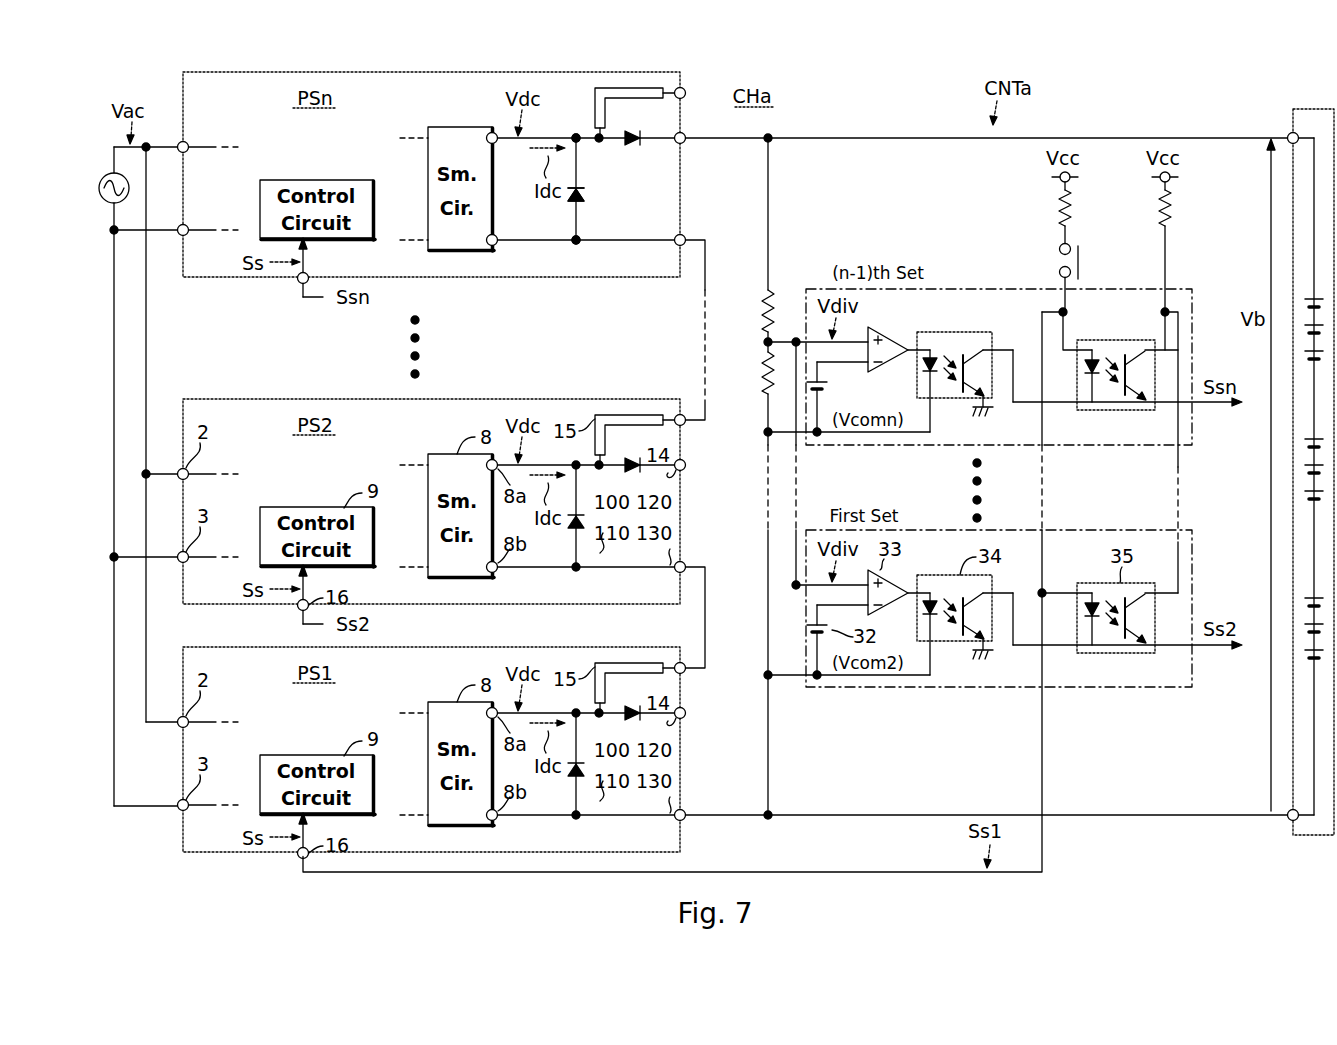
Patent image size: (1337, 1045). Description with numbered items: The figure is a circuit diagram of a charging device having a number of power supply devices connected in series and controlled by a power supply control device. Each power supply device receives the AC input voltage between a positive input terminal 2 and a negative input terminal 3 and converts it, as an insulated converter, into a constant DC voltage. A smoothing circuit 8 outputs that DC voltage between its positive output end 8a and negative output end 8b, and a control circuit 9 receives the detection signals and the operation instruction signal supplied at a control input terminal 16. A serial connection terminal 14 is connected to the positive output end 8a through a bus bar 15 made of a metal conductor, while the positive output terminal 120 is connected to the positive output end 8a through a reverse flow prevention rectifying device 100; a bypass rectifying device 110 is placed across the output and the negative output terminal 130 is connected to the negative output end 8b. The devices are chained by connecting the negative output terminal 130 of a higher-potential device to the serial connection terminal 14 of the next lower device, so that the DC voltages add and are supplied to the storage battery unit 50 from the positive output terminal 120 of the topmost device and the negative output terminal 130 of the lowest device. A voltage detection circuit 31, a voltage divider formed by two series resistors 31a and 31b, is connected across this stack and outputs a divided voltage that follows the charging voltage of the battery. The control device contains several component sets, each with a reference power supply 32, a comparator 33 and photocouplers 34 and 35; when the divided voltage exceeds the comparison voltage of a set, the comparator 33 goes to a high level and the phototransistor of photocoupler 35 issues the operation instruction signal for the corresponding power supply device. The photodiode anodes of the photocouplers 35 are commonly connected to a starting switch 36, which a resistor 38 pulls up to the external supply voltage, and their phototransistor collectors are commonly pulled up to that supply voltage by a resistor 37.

The positive input terminal 2 is at (186, 141).
The negative input terminal 3 is at (186, 225).
The smoothing circuit 8 is at (457, 127).
The positive output end 8a is at (498, 142).
The negative output end 8b is at (498, 236).
The control circuit 9 is at (344, 181).
The serial connection terminal 14 is at (676, 143).
The bus bar 15 is at (595, 92).
The control input terminal 16 is at (309, 278).
The reverse flow prevention rectifying device 100 is at (600, 226).
The bypass rectifying device 110 is at (599, 202).
The positive output terminal 120 is at (622, 160).
The negative output terminal 130 is at (670, 238).
The voltage detection circuit 31 is at (763, 476).
The resistor 31a is at (765, 302).
The resistor 31b is at (765, 404).
The reference power supply 32 is at (832, 387).
The comparator 33 is at (880, 327).
The photocoupler 34 is at (960, 332).
The photocoupler 35 is at (1120, 340).
The starting switch 36 is at (1082, 262).
The resistor 37 is at (1166, 224).
The resistor 38 is at (1060, 224).
The storage battery unit 50 is at (1308, 108).